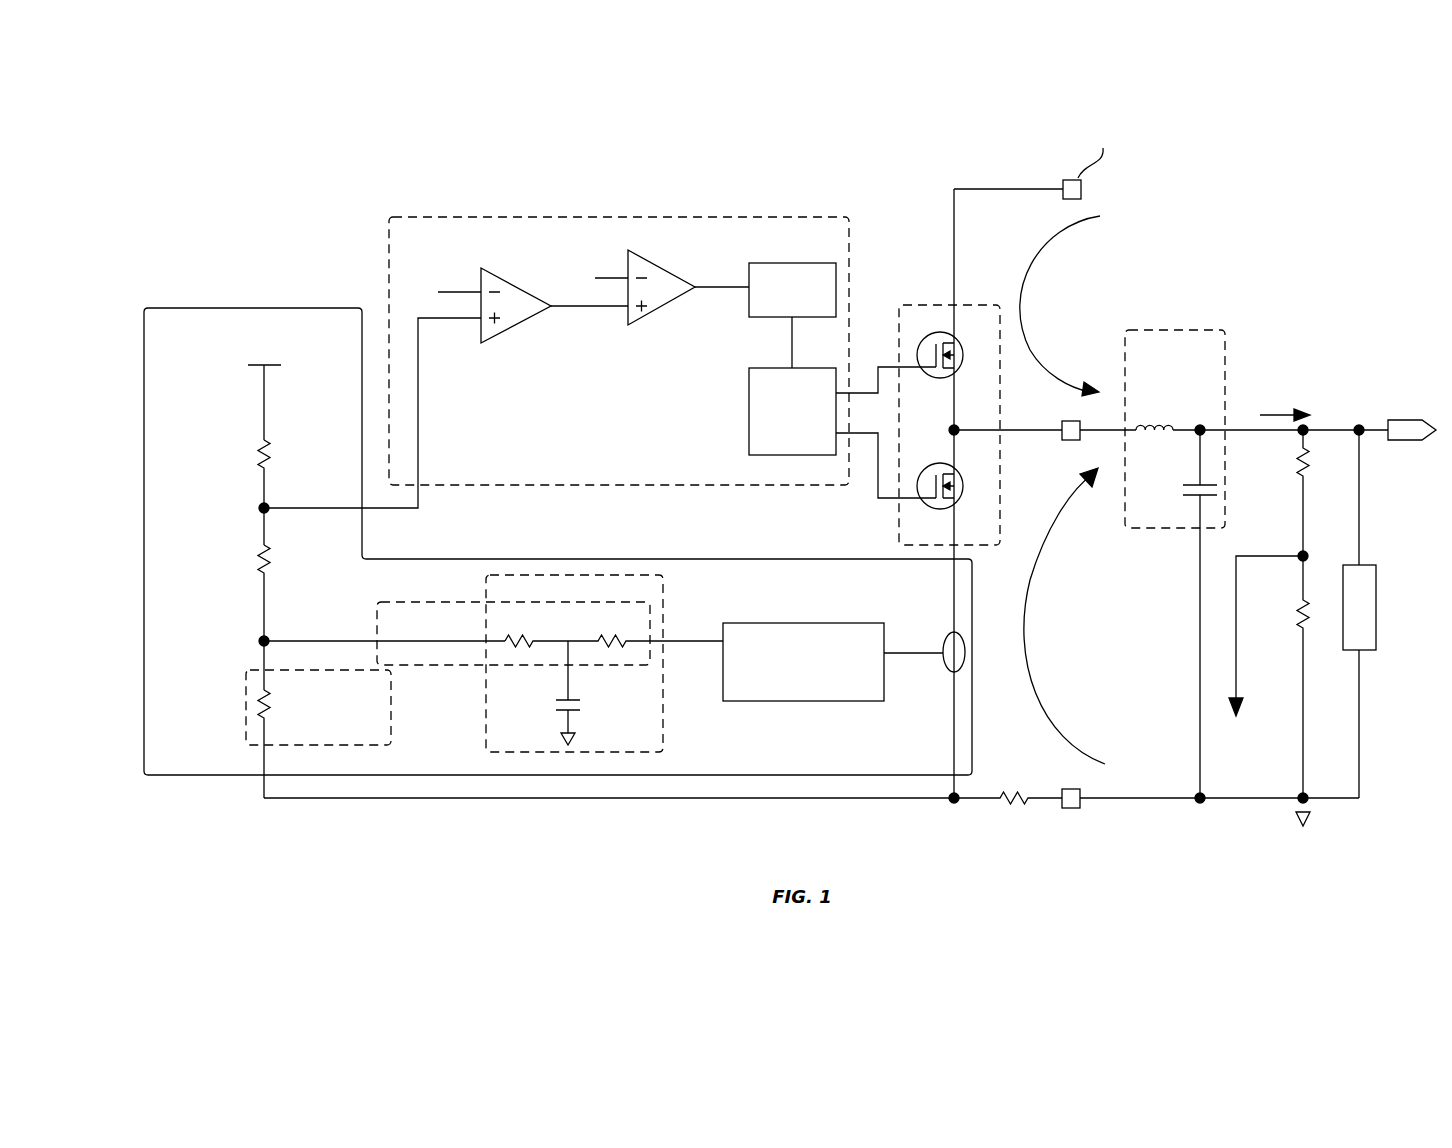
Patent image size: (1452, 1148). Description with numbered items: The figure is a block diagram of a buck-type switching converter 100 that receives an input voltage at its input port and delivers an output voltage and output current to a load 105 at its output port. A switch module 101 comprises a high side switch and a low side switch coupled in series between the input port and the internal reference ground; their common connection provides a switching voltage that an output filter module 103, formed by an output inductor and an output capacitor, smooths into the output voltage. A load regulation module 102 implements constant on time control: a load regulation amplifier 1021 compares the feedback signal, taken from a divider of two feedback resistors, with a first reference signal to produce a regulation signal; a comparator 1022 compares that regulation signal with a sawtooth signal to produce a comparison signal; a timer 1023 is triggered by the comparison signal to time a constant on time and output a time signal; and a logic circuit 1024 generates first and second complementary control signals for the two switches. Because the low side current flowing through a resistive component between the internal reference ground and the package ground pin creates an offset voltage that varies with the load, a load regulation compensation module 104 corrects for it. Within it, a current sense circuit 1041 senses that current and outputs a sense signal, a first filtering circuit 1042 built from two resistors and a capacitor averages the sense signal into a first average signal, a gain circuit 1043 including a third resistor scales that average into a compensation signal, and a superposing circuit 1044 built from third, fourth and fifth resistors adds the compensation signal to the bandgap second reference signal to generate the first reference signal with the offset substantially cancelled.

The switching converter 100 is at (207, 125).
The switch module 101 is at (922, 303).
The load regulation module 102 is at (600, 362).
The load regulation amplifier 1021 is at (490, 270).
The comparator 1022 is at (650, 322).
The timer 1023 is at (792, 290).
The logic circuit 1024 is at (792, 411).
The output filter module 103 is at (1256, 564).
The load regulation compensation module 104 is at (218, 305).
The current sense circuit 1041 is at (850, 622).
The first filtering circuit 1042 is at (663, 737).
The gain circuit 1043 is at (318, 734).
The superposing circuit 1044 is at (232, 432).
The load 105 is at (1378, 570).